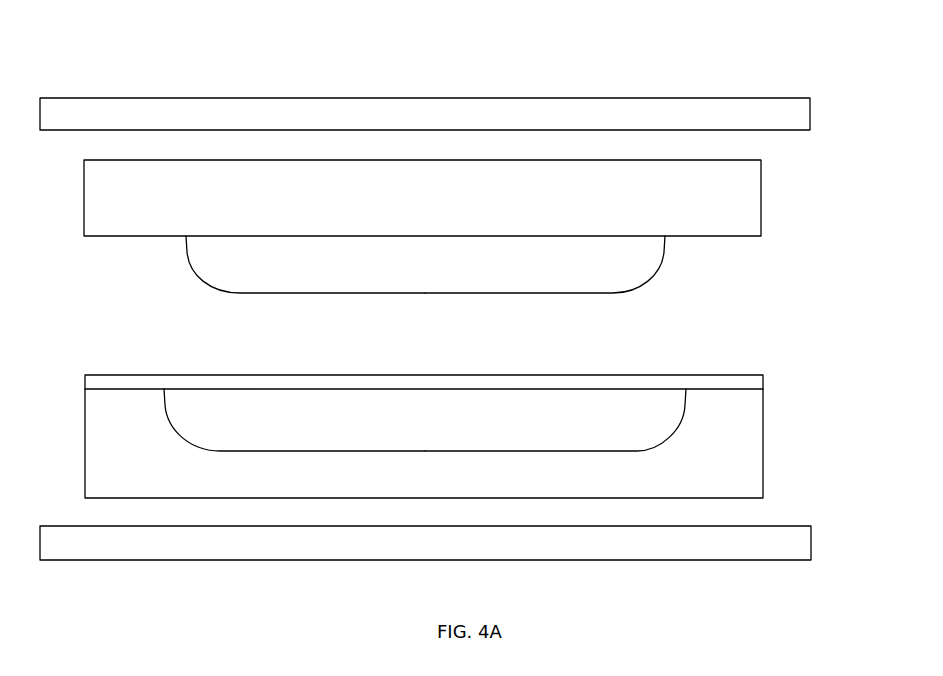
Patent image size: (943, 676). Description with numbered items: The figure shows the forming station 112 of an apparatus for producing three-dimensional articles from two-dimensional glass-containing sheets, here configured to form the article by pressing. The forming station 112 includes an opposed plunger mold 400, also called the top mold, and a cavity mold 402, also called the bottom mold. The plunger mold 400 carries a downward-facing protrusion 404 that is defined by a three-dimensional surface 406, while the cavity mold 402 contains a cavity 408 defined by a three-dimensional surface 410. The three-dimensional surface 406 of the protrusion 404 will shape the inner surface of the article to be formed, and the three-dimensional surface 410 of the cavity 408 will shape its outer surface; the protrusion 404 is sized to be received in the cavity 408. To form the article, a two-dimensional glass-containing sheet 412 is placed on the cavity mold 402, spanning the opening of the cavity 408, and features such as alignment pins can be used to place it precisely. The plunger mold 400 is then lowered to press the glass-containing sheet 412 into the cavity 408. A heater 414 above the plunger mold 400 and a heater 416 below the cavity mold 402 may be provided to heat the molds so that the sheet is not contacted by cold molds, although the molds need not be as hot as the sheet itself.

The forming station 112 is at (426, 80).
The plunger mold 400 is at (677, 180).
The cavity mold 402 is at (688, 480).
The protrusion 404 is at (649, 254).
The 3D surface 406 is at (188, 254).
The cavity 408 is at (643, 432).
The 3D surface 410 is at (236, 450).
The 2D glass-containing sheet 412 is at (424, 381).
The heater 414 is at (318, 110).
The heater 416 is at (342, 547).